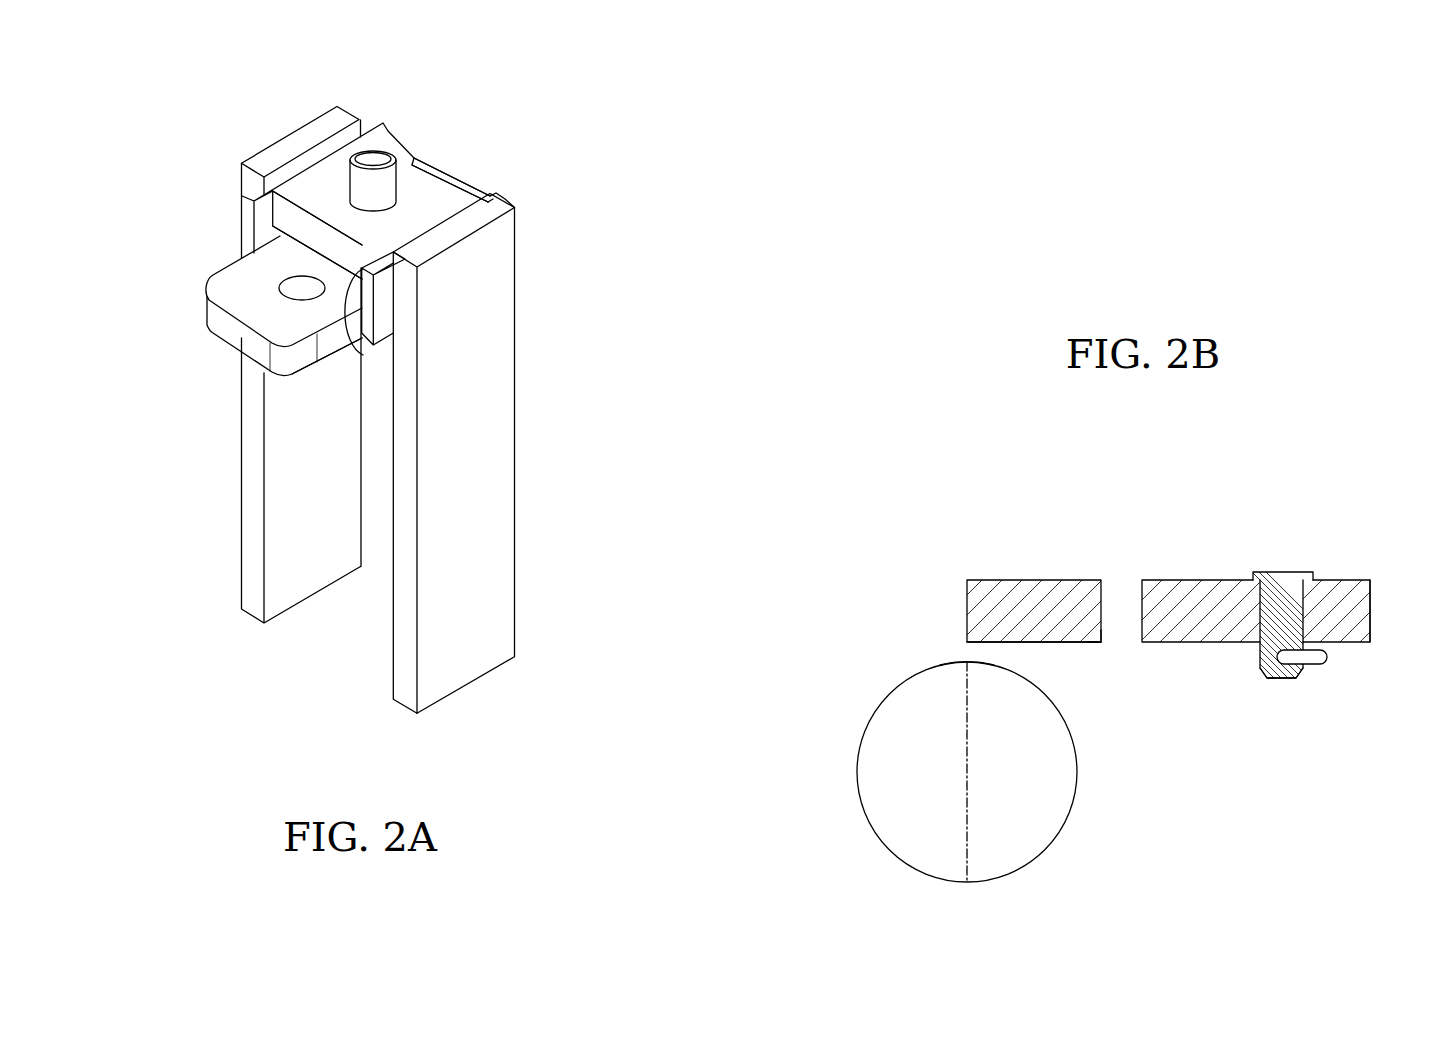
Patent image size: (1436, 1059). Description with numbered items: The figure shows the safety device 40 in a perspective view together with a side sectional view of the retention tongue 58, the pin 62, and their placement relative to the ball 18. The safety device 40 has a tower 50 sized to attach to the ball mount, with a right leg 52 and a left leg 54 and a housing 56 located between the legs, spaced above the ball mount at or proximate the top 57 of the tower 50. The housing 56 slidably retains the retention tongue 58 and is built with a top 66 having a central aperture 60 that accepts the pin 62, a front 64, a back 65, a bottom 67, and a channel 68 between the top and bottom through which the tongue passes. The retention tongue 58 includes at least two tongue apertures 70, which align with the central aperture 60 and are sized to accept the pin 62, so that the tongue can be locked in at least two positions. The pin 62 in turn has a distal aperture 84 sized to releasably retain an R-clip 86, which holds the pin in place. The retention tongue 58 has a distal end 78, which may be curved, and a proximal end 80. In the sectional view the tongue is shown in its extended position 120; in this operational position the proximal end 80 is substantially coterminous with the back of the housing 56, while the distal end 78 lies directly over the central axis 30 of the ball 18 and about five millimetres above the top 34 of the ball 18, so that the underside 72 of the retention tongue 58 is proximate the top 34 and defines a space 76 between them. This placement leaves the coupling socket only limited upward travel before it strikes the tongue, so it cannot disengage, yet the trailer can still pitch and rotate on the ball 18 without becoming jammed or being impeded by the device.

In FIG. 2B, the ball 18 is at (1050, 805).
In FIG. 2B, the central axis 30 is at (965, 765).
In FIG. 2B, the top 34 is at (975, 661).
In FIG. 2A, the safety device 40 is at (622, 259).
In FIG. 2A, the tower 50 is at (500, 408).
In FIG. 2A, the right leg 52 is at (503, 498).
In FIG. 2A, the left leg 54 is at (273, 413).
In FIG. 2A, the housing 56 is at (383, 285).
In FIG. 2A, the top 57 is at (347, 118).
In FIG. 2A, the retention tongue 58 is at (233, 275).
In FIG. 2B, the retention tongue 58 is at (1183, 590).
In FIG. 2A, the central aperture 60 is at (457, 202).
In FIG. 2A, the pin 62 is at (383, 162).
In FIG. 2B, the pin 62 is at (1290, 603).
In FIG. 2A, the front 64 is at (280, 215).
In FIG. 2A, the back 65 is at (425, 165).
In FIG. 2A, the top 66 is at (473, 192).
In FIG. 2A, the bottom 67 is at (368, 330).
In FIG. 2A, the channel 68 is at (362, 358).
In FIG. 2A, the tongue apertures 70 is at (295, 288).
In FIG. 2B, the tongue apertures 70 is at (1121, 593).
In FIG. 2B, the underside 72 is at (1087, 642).
In FIG. 2B, the space 76 is at (967, 652).
In FIG. 2A, the distal end 78 is at (242, 335).
In FIG. 2B, the distal end 78 is at (967, 597).
In FIG. 2A, the proximal end 80 is at (466, 200).
In FIG. 2B, the proximal end 80 is at (1370, 607).
In FIG. 2B, the distal aperture 84 is at (1268, 670).
In FIG. 2B, the R-clip 86 is at (1327, 661).
In FIG. 2A, the extended position 120 is at (214, 452).